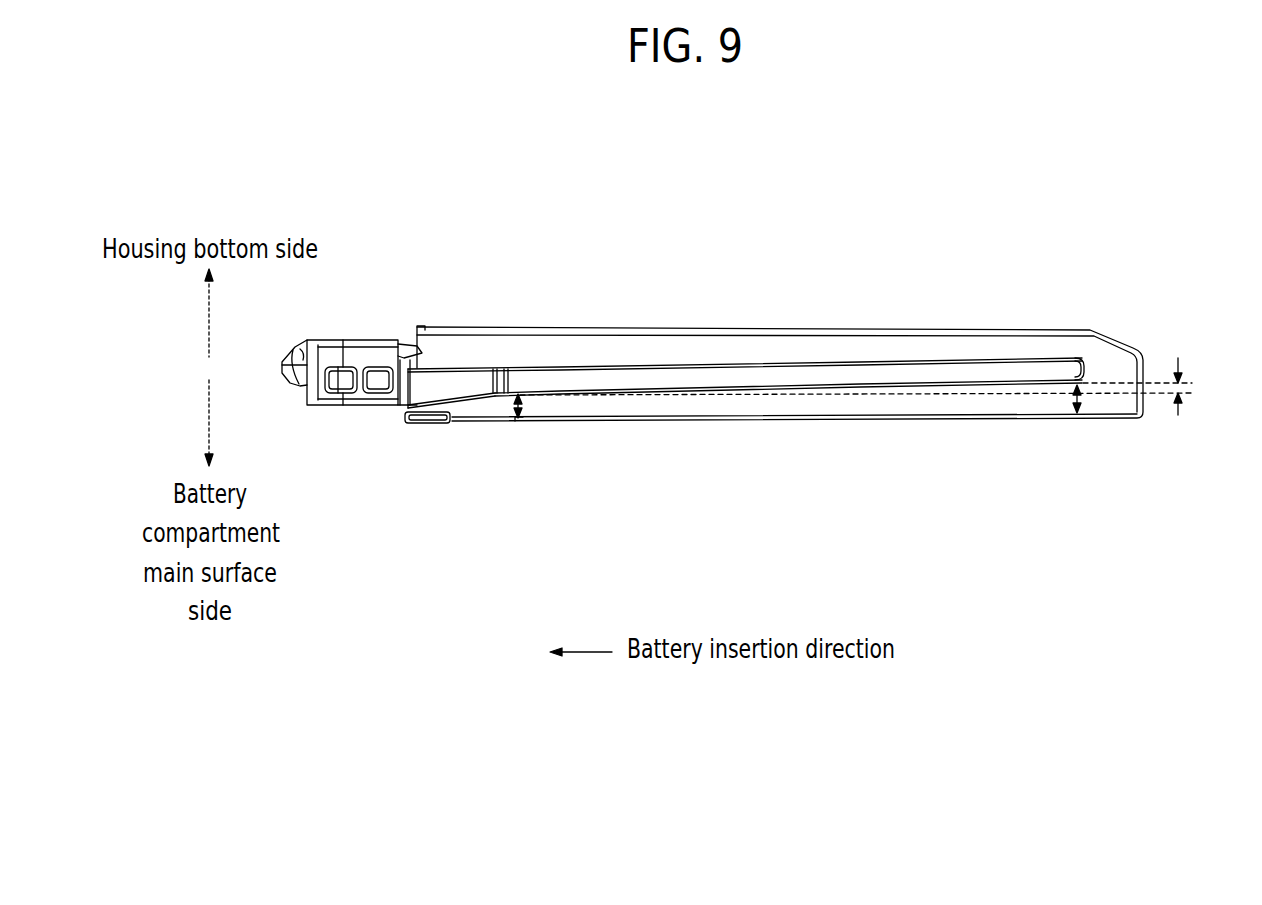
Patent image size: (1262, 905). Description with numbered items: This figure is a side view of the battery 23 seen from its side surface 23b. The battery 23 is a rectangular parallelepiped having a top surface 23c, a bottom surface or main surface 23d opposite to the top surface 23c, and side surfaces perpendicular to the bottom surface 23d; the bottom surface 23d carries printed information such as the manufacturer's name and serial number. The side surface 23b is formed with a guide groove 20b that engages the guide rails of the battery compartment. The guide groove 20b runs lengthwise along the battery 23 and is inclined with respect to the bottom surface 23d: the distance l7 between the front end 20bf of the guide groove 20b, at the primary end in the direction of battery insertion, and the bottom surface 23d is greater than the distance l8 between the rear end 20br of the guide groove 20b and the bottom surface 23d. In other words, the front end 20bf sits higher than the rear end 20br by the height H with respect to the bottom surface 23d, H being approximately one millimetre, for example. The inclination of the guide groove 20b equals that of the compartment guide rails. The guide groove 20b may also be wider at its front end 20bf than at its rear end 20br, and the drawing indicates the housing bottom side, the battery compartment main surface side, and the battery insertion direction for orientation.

The battery 23 is at (720, 491).
The side surface 23b is at (734, 347).
The top surface 23c is at (654, 327).
The bottom surface (main surface) 23d is at (828, 423).
The guide groove 20b is at (843, 376).
The rear end of guide groove 20br is at (512, 368).
The front end of guide groove 20bf is at (1070, 358).
The distance l7 is at (1077, 400).
The distance l8 is at (520, 406).
The height difference H is at (1183, 388).